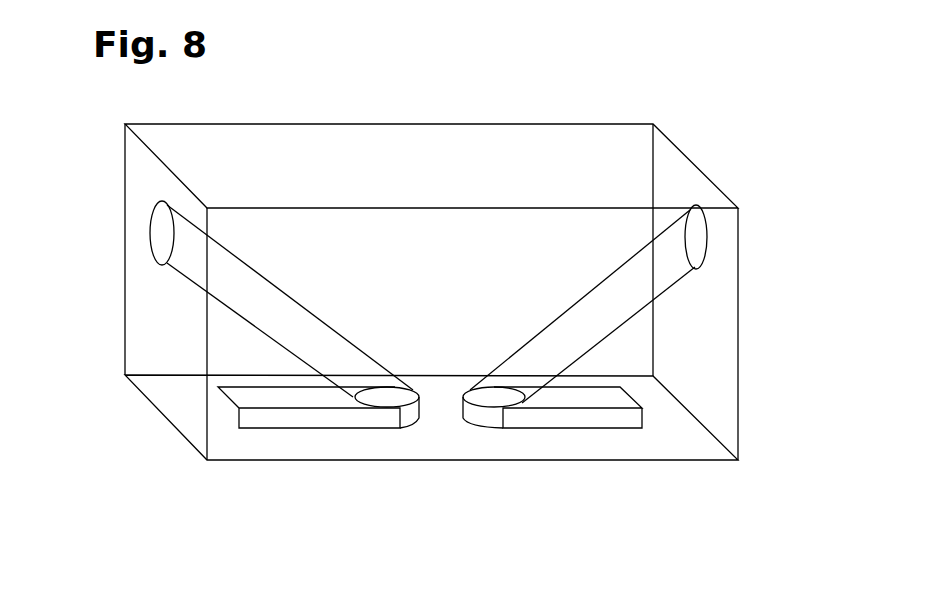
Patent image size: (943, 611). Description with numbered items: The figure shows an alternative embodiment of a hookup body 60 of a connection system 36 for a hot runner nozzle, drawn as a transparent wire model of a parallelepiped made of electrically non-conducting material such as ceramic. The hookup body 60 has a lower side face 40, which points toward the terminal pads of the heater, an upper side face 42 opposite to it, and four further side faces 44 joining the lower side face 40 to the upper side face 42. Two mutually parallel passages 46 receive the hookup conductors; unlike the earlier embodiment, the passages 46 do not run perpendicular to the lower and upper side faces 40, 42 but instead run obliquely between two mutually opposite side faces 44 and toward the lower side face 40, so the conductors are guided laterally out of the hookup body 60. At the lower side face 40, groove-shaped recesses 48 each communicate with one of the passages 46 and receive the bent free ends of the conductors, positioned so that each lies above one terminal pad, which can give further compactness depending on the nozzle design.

The connection system 36 is at (700, 122).
The lower side face 40 is at (459, 472).
The upper side face 42 is at (350, 158).
The side faces 44 is at (517, 248).
The passages 46 is at (238, 287).
The groove-shaped recesses 48 is at (312, 397).
The hookup body 60 is at (443, 105).